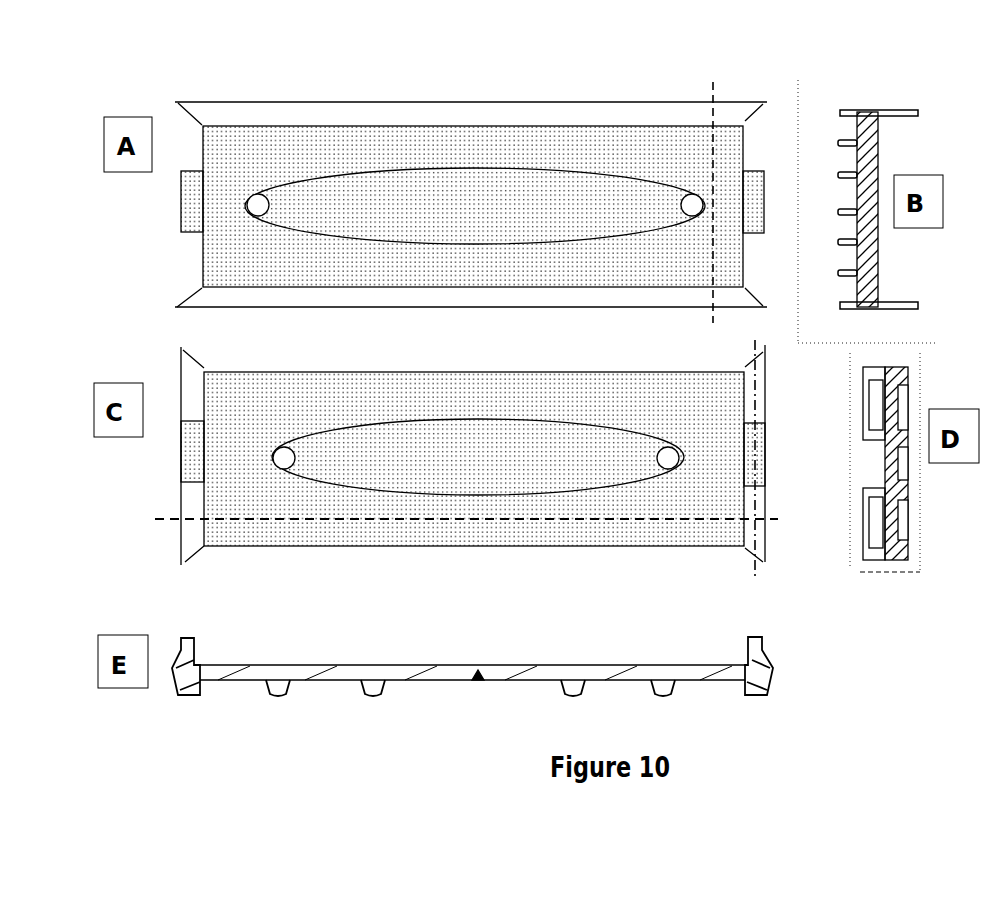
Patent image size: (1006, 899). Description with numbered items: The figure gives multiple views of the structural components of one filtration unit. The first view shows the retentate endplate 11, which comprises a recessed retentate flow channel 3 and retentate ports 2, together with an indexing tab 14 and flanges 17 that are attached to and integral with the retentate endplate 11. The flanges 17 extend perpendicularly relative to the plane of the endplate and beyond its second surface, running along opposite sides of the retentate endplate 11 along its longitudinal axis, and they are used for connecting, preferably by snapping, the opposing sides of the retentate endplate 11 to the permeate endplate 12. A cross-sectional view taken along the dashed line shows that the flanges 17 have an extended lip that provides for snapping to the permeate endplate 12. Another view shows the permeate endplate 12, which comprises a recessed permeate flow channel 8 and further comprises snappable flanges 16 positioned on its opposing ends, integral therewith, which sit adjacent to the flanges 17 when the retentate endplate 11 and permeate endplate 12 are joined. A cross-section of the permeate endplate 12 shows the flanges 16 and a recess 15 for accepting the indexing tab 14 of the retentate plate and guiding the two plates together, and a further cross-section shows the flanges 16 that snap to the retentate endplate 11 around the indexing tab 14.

The retentate ports 2 is at (257, 193).
The recessed retentate flow channel 3 is at (445, 208).
The recessed permeate flow channel 8 is at (485, 470).
The retentate endplate 11 is at (212, 248).
The permeate endplate 12 is at (297, 515).
The indexing tab 14 is at (182, 192).
The recess 15 is at (182, 440).
The snappable flanges 16 is at (192, 505).
The flanges 17 is at (733, 110).